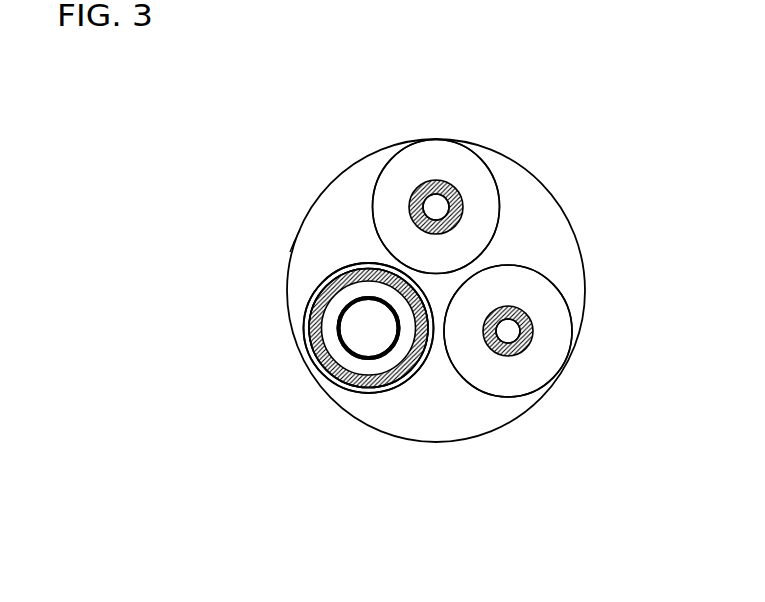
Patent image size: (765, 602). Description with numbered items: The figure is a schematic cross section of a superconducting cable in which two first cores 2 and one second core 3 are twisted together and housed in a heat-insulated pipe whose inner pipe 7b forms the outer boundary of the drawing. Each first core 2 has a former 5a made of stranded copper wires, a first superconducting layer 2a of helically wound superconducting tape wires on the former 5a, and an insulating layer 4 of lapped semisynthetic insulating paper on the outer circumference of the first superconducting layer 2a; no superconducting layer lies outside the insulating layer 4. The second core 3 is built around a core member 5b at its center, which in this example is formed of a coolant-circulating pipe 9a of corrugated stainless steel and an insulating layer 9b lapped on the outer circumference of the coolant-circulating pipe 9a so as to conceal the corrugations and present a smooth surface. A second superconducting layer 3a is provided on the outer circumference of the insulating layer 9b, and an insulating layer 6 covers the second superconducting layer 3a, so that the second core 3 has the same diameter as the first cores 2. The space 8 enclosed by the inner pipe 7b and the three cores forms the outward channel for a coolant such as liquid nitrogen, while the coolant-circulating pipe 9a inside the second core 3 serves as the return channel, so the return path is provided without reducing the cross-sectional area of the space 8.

The first core 2 is at (516, 261).
The first superconducting layer 2a is at (413, 211).
The second core 3 is at (302, 304).
The second superconducting layer 3a is at (311, 337).
The insulating layer 4 is at (458, 157).
The former 5a is at (428, 202).
The core member 5b is at (293, 431).
The insulating layer 6 is at (397, 388).
The inner pipe 7b is at (292, 250).
The space 8 is at (333, 226).
The coolant-circulating pipe 9a is at (364, 360).
The insulating layer 9b is at (320, 372).